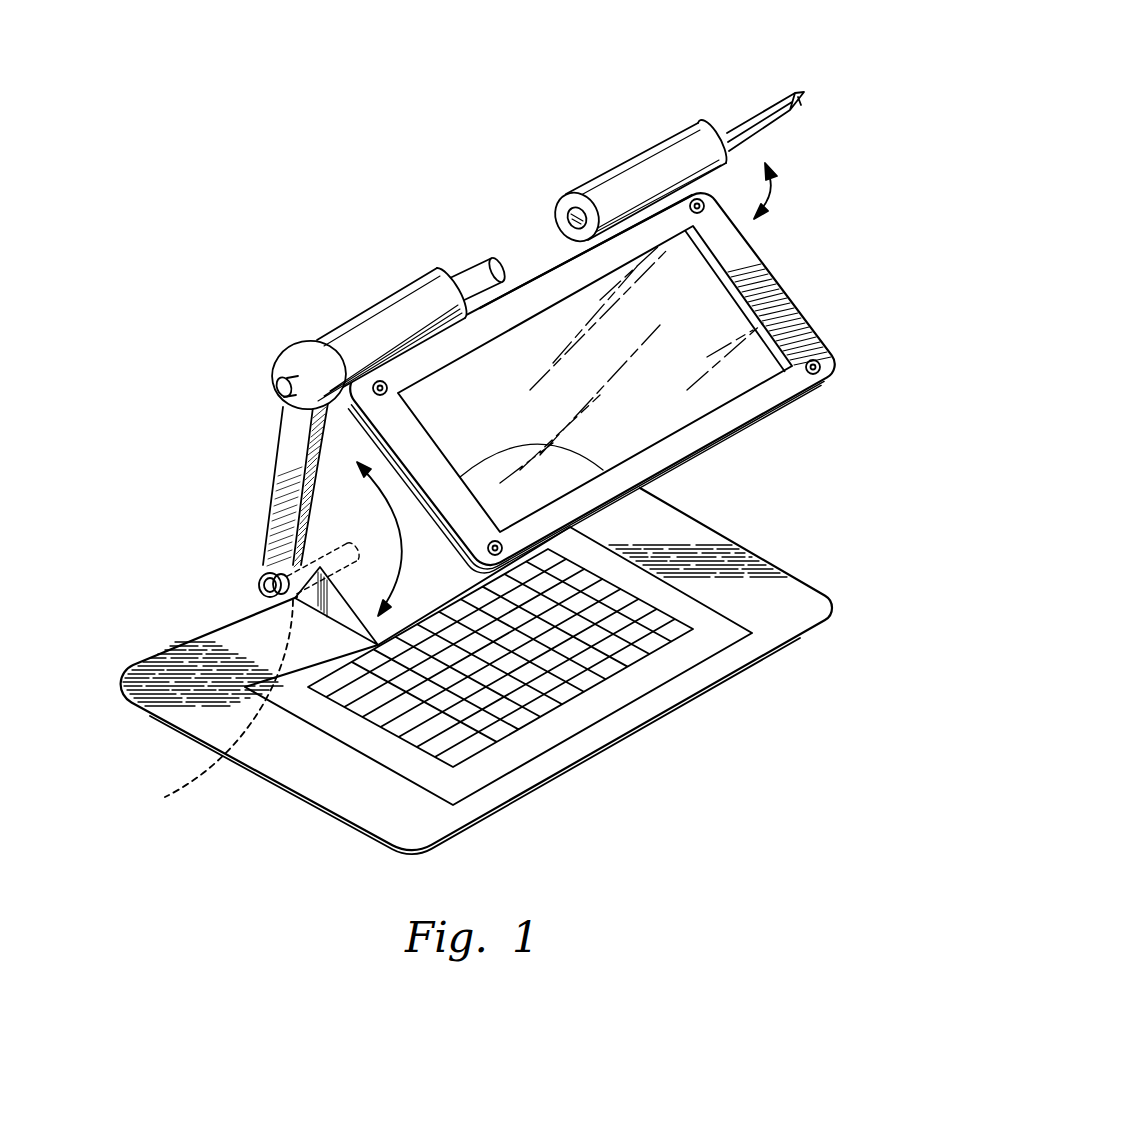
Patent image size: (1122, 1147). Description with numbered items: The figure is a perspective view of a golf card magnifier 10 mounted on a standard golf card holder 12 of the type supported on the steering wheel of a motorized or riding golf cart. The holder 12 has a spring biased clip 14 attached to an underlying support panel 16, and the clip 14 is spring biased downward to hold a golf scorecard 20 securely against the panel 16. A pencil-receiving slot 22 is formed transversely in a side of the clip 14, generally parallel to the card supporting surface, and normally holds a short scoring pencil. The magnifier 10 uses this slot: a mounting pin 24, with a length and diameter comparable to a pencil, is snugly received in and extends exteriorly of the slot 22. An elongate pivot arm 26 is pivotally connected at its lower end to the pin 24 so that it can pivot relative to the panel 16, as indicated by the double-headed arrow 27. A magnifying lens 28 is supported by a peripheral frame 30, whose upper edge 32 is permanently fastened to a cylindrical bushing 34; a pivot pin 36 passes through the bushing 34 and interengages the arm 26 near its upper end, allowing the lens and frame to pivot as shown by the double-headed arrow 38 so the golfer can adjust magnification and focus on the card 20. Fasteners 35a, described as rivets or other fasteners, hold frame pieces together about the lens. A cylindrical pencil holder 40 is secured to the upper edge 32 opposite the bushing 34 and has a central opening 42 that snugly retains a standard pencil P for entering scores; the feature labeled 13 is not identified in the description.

The golf card magnifier 10 is at (370, 146).
The golf card holder 12 is at (757, 550).
The scorecard grid / data entry area 13 is at (423, 611).
The spring biased clip 14 is at (265, 625).
The support panel 16 is at (577, 763).
The golf scorecard 20 is at (677, 677).
The pencil-receiving slot 22 is at (209, 706).
The mounting pin 24 is at (258, 590).
The pivot arm 26 is at (278, 470).
The double-headed arrow 27 is at (403, 514).
The magnifying lens 28 is at (694, 348).
The peripheral frame 30 is at (612, 375).
The upper edge 32 is at (550, 267).
The cylindrical bushing 34 is at (345, 322).
The fasteners 35a is at (823, 372).
The pivot pin 36 is at (278, 390).
The double-headed arrow 38 is at (773, 191).
The pencil holder 40 is at (626, 151).
The central opening 42 is at (562, 198).
The pencil P is at (777, 92).